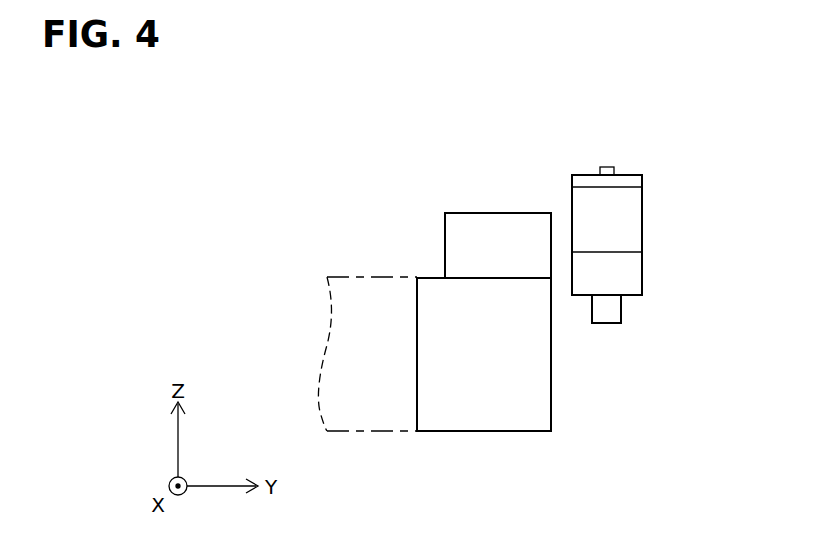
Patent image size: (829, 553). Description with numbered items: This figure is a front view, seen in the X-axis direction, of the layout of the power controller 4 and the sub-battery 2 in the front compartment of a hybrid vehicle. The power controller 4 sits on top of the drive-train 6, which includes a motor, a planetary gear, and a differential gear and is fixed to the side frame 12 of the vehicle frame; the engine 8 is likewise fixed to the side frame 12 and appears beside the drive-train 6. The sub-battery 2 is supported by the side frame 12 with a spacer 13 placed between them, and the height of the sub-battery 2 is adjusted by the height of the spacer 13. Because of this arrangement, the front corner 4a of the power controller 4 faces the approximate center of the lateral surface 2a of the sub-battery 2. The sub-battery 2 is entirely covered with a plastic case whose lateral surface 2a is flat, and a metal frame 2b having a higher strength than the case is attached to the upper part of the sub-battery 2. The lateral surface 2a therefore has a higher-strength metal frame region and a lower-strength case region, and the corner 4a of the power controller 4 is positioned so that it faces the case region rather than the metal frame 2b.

The sub-battery 2 is at (628, 173).
The lateral surface 2a is at (561, 203).
The metal frame 2b is at (643, 178).
The power controller 4 is at (455, 223).
The front corner 4a is at (546, 208).
The drive-train 6 is at (483, 420).
The engine 8 is at (347, 285).
The side frame 12 is at (617, 309).
The spacer 13 is at (637, 271).